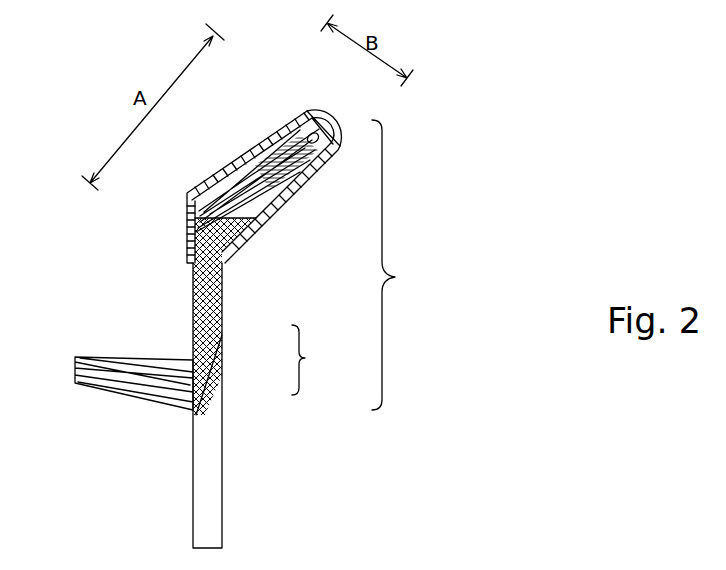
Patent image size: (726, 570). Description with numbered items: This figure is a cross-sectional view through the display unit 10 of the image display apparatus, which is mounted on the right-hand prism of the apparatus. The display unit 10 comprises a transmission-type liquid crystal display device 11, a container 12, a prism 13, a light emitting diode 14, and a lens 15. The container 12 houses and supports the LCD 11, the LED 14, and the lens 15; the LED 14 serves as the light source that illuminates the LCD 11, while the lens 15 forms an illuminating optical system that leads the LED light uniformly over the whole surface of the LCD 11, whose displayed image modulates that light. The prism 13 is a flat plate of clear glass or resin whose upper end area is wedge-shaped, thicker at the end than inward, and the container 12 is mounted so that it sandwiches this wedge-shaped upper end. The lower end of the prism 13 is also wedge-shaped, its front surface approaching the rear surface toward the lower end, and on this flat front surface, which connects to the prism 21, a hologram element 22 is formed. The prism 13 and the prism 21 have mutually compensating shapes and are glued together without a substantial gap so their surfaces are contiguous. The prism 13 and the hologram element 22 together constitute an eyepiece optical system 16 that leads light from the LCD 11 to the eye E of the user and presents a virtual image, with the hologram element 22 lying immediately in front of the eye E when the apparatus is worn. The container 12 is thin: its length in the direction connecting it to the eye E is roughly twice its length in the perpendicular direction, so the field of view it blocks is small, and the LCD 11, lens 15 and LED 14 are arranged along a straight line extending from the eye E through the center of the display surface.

The display unit 10 is at (306, 260).
The transmission-type liquid crystal display device 11 is at (287, 217).
The container 12 is at (213, 173).
The prism 13 is at (223, 328).
The light emitting diode 14 is at (327, 160).
The lens 15 is at (300, 186).
The eyepiece optical system 16 is at (313, 360).
The prism 21 is at (222, 448).
The hologram element 22 is at (200, 383).
The eye E is at (70, 366).